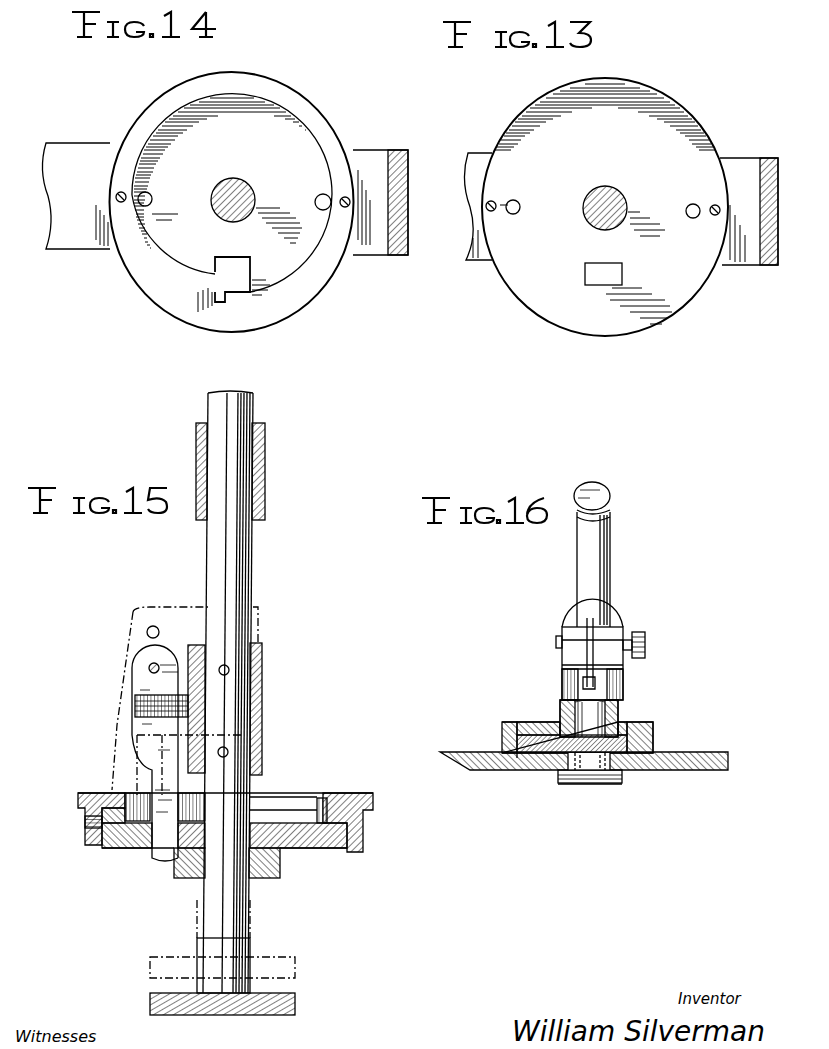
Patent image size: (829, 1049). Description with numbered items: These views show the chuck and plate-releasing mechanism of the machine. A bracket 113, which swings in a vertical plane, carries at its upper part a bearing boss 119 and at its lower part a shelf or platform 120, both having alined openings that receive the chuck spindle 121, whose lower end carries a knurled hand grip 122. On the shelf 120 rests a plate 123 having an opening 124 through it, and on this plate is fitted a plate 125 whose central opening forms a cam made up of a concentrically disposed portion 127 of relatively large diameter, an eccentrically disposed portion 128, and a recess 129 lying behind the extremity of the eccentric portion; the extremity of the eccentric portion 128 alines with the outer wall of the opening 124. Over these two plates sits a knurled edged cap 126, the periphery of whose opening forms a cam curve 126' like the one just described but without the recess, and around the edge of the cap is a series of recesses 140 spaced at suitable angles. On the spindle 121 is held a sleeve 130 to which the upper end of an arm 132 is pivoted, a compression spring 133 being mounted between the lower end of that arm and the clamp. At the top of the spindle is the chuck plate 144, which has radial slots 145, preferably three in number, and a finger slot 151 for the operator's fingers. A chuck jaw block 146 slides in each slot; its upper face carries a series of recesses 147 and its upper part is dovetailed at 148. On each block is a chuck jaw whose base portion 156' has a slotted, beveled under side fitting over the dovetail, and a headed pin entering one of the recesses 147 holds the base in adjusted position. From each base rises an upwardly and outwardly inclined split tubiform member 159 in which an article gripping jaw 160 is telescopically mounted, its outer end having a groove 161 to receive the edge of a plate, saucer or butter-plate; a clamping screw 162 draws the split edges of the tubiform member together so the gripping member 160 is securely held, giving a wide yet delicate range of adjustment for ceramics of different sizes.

In FIG. 14, the bracket 113 is at (400, 256).
In FIG. 13, the bracket 113 is at (770, 262).
In FIG. 15, the bearing boss 119 is at (265, 470).
In FIG. 14, the shelf or platform 120 is at (80, 262).
In FIG. 13, the shelf or platform 120 is at (466, 262).
In FIG. 15, the shelf or platform 120 is at (280, 870).
In FIG. 14, the chuck spindle 121 is at (253, 192).
In FIG. 13, the chuck spindle 121 is at (590, 222).
In FIG. 15, the chuck spindle 121 is at (253, 578).
In FIG. 15, the hand grip 122 is at (150, 1005).
In FIG. 13, the plate 123 is at (520, 295).
In FIG. 15, the plate 123 is at (107, 850).
In FIG. 13, the opening 124 is at (583, 288).
In FIG. 15, the opening 124 is at (140, 852).
In FIG. 14, the plate 125 is at (290, 311).
In FIG. 15, the plate 125 is at (373, 818).
In FIG. 15, the knurled edged cap 126 is at (229, 810).
In FIG. 15, the cam curve 126' is at (288, 783).
In FIG. 14, the concentrically disposed portion 127 is at (310, 270).
In FIG. 15, the concentrically disposed portion 127 is at (311, 822).
In FIG. 14, the eccentrically disposed portion 128 is at (178, 262).
In FIG. 15, the eccentrically disposed portion 128 is at (200, 808).
In FIG. 14, the recess 129 is at (222, 297).
In FIG. 15, the recess 129 is at (85, 832).
In FIG. 15, the sleeve 130 is at (262, 690).
In FIG. 15, the arm 132 is at (140, 755).
In FIG. 15, the compression spring 133 is at (135, 706).
In FIG. 15, the recesses 140 is at (85, 826).
In FIG. 16, the chuck plate 144 is at (478, 764).
In FIG. 16, the radial slots 145 is at (556, 776).
In FIG. 16, the chuck jaw block 146 is at (565, 784).
In FIG. 16, the recesses 147 is at (581, 787).
In FIG. 16, the dovetailed upper part 148 is at (627, 725).
In FIG. 16, the finger slot 151 is at (520, 762).
In FIG. 16, the base portion 156' is at (601, 729).
In FIG. 16, the split tubiform member 159 is at (623, 612).
In FIG. 16, the article gripping jaw 160 is at (611, 562).
In FIG. 16, the groove 161 is at (610, 508).
In FIG. 16, the clamping screw 162 is at (647, 646).